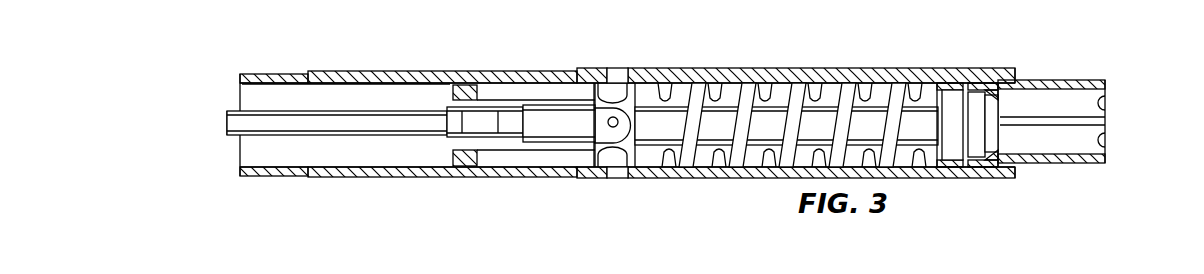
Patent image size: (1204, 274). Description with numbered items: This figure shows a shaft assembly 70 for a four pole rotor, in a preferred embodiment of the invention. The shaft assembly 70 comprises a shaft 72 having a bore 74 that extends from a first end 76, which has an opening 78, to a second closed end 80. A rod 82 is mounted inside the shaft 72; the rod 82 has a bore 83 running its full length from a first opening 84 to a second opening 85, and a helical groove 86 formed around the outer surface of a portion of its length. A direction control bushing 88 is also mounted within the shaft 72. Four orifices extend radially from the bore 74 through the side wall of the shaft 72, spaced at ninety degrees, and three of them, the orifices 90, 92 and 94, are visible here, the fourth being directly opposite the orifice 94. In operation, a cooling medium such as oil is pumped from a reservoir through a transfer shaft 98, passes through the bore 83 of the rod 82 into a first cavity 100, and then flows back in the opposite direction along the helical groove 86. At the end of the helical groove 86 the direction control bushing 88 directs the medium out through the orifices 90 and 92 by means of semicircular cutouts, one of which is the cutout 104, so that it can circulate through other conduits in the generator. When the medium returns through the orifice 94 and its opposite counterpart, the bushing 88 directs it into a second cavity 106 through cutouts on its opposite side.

The shaft assembly 70 is at (256, 42).
The shaft 72 is at (383, 72).
The bore 74 is at (418, 97).
The first end 76 is at (237, 178).
The opening 78 is at (230, 148).
The second closed end 80 is at (1105, 163).
The rod 82 is at (556, 116).
The bore of rod 83 is at (508, 118).
The first opening 84 is at (442, 150).
The second opening 85 is at (998, 138).
The helical groove 86 is at (782, 90).
The direction control bushing 88 is at (630, 100).
The orifice 90 is at (617, 72).
The orifice 92 is at (623, 86).
The orifice 94 is at (618, 126).
The transfer shaft 98 is at (299, 133).
The first cavity 100 is at (1048, 103).
The semicircular cutout 104 is at (623, 153).
The second cavity 106 is at (315, 98).